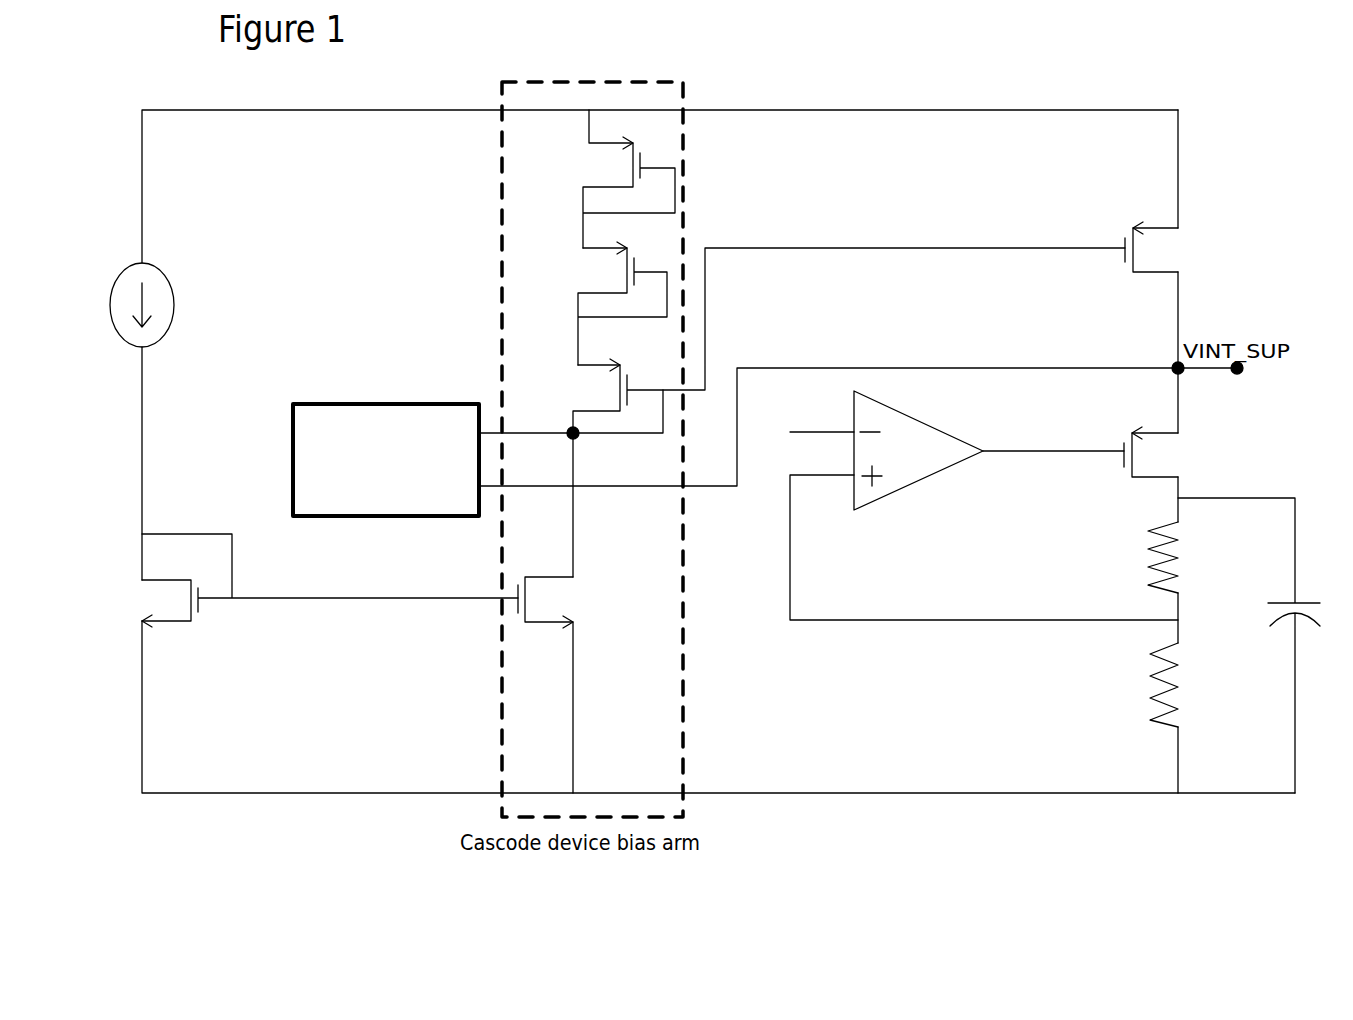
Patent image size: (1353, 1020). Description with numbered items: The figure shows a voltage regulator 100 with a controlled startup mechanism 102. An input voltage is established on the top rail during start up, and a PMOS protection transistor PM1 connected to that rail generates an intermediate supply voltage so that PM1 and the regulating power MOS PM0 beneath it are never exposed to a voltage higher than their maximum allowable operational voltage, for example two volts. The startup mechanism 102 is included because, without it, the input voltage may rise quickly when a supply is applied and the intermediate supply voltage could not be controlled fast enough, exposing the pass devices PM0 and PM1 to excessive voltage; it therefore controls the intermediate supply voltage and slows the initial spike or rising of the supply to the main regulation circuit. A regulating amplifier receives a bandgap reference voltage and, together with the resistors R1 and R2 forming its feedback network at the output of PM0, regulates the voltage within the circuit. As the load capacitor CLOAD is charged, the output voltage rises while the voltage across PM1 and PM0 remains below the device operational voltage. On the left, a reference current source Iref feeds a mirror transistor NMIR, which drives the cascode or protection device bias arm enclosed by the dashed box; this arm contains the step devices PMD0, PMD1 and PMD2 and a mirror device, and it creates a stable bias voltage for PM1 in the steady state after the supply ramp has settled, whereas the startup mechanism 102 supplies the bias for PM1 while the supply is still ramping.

The voltage regulator 100 is at (1206, 84).
The startup mechanism 102 is at (369, 530).
The reference current source Iref is at (173, 305).
The NMOS mirror transistor NMIR is at (330, 567).
The step device PMD0 is at (597, 179).
The step device PMD1 is at (593, 303).
The step device PMD2 is at (822, 412).
The protection transistor PM1 is at (1178, 247).
The regulating power MOS PM0 is at (1171, 452).
The resistor R1 is at (1143, 557).
The resistor R2 is at (1143, 685).
The Cload capacitor CLOAD is at (1249, 645).